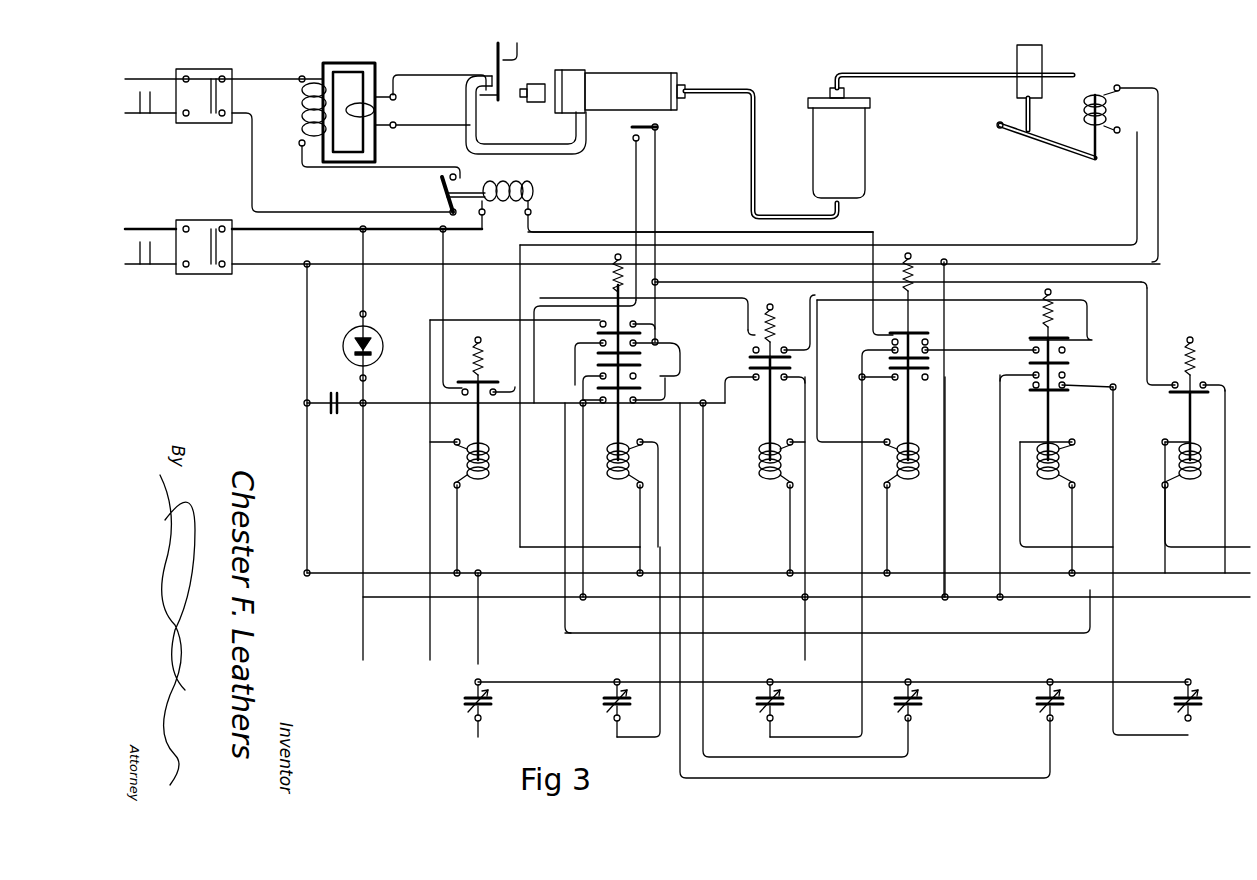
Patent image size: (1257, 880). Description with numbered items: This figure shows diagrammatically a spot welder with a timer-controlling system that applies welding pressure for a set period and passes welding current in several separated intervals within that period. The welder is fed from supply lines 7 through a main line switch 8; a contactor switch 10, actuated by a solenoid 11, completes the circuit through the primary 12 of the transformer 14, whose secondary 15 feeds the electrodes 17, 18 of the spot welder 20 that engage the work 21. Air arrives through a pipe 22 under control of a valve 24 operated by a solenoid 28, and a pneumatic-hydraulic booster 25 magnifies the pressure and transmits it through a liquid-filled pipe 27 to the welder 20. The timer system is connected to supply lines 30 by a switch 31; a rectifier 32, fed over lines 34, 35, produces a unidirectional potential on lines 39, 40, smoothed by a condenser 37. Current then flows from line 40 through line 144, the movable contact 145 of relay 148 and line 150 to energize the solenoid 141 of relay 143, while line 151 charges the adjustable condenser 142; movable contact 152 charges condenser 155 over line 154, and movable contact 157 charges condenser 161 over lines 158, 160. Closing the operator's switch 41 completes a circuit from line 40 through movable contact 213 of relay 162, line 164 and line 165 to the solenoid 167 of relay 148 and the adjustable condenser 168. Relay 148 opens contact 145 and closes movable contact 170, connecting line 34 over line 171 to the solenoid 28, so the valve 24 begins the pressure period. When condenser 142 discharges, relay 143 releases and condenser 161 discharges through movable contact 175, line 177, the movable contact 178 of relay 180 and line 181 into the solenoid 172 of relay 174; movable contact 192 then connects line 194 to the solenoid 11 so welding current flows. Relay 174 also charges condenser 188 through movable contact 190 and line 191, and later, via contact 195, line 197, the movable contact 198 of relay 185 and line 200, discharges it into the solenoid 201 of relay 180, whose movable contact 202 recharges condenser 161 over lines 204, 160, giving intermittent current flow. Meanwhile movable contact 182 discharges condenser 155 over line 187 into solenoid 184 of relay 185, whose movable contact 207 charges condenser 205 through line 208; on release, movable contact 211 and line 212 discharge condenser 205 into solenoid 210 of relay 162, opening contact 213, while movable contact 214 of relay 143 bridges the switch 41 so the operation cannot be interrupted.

The lines 7 is at (224, 109).
The main line switch 8 is at (196, 123).
The contactor switch 10 is at (440, 188).
The solenoid 11 is at (520, 190).
The primary 12 is at (305, 110).
The transformer 14 is at (372, 66).
The secondary 15 is at (376, 110).
The electrode 17 is at (526, 115).
The electrode 18 is at (530, 83).
The spot welder 20 is at (615, 73).
The work 21 is at (520, 50).
The pipe 22 is at (1070, 76).
The valve 24 is at (1035, 58).
The pneumatic-hydraulic booster 25 is at (852, 148).
The pipe 27 is at (725, 90).
The solenoid 28 is at (1105, 110).
The lines 30 is at (642, 230).
The switch 31 is at (196, 220).
The rectifier 32 is at (380, 336).
The line 34 is at (284, 230).
The line 35 is at (366, 300).
The condenser 37 is at (334, 416).
The line 39 is at (1160, 130).
The line 40 is at (364, 484).
The switch 41 is at (658, 127).
The solenoid 141 is at (612, 476).
The adjustable condenser 142 is at (604, 706).
The relay 143 is at (612, 426).
The line 144 is at (392, 406).
The movable contact 145 is at (494, 395).
The relay 148 is at (494, 380).
The line 150 is at (605, 547).
The line 151 is at (660, 614).
The movable contact 152 is at (605, 357).
The line 154 is at (681, 451).
The condenser 155 is at (1063, 706).
The movable contact 157 is at (598, 399).
The line 158 is at (686, 400).
The line 160 is at (703, 508).
The condenser 161 is at (921, 704).
The relay 162 is at (1201, 421).
The line 164 is at (657, 188).
The line 165 is at (634, 188).
The solenoid 167 is at (488, 472).
The adjustable condenser 168 is at (490, 706).
The movable contact 170 is at (465, 378).
The line 171 is at (1136, 188).
The solenoid 172 is at (910, 476).
The relay 174 is at (905, 385).
The movable contact 175 is at (636, 380).
The line 177 is at (540, 380).
The movable contact 178 is at (786, 333).
The relay 180 is at (768, 410).
The line 181 is at (805, 345).
The movable contact 182 is at (613, 331).
The solenoid 184 is at (1052, 506).
The relay 185 is at (1050, 408).
The line 187 is at (565, 436).
The condenser 188 is at (783, 704).
The contact 190 is at (928, 371).
The line 191 is at (765, 740).
The movable contact 192 is at (908, 330).
The line 194 is at (545, 230).
The movable contact 195 is at (930, 357).
The line 197 is at (968, 352).
The movable contact 198 is at (1064, 313).
The line 200 is at (1085, 300).
The solenoid 201 is at (758, 468).
The movable contact 202 is at (750, 360).
The line 204 is at (725, 406).
The condenser 205 is at (1201, 706).
The movable contact 207 is at (1068, 363).
The line 208 is at (1113, 406).
The solenoid 210 is at (1190, 478).
The movable contact 211 is at (1036, 388).
The line 212 is at (1020, 519).
The movable contact 213 is at (1192, 385).
The movable contact 214 is at (618, 340).